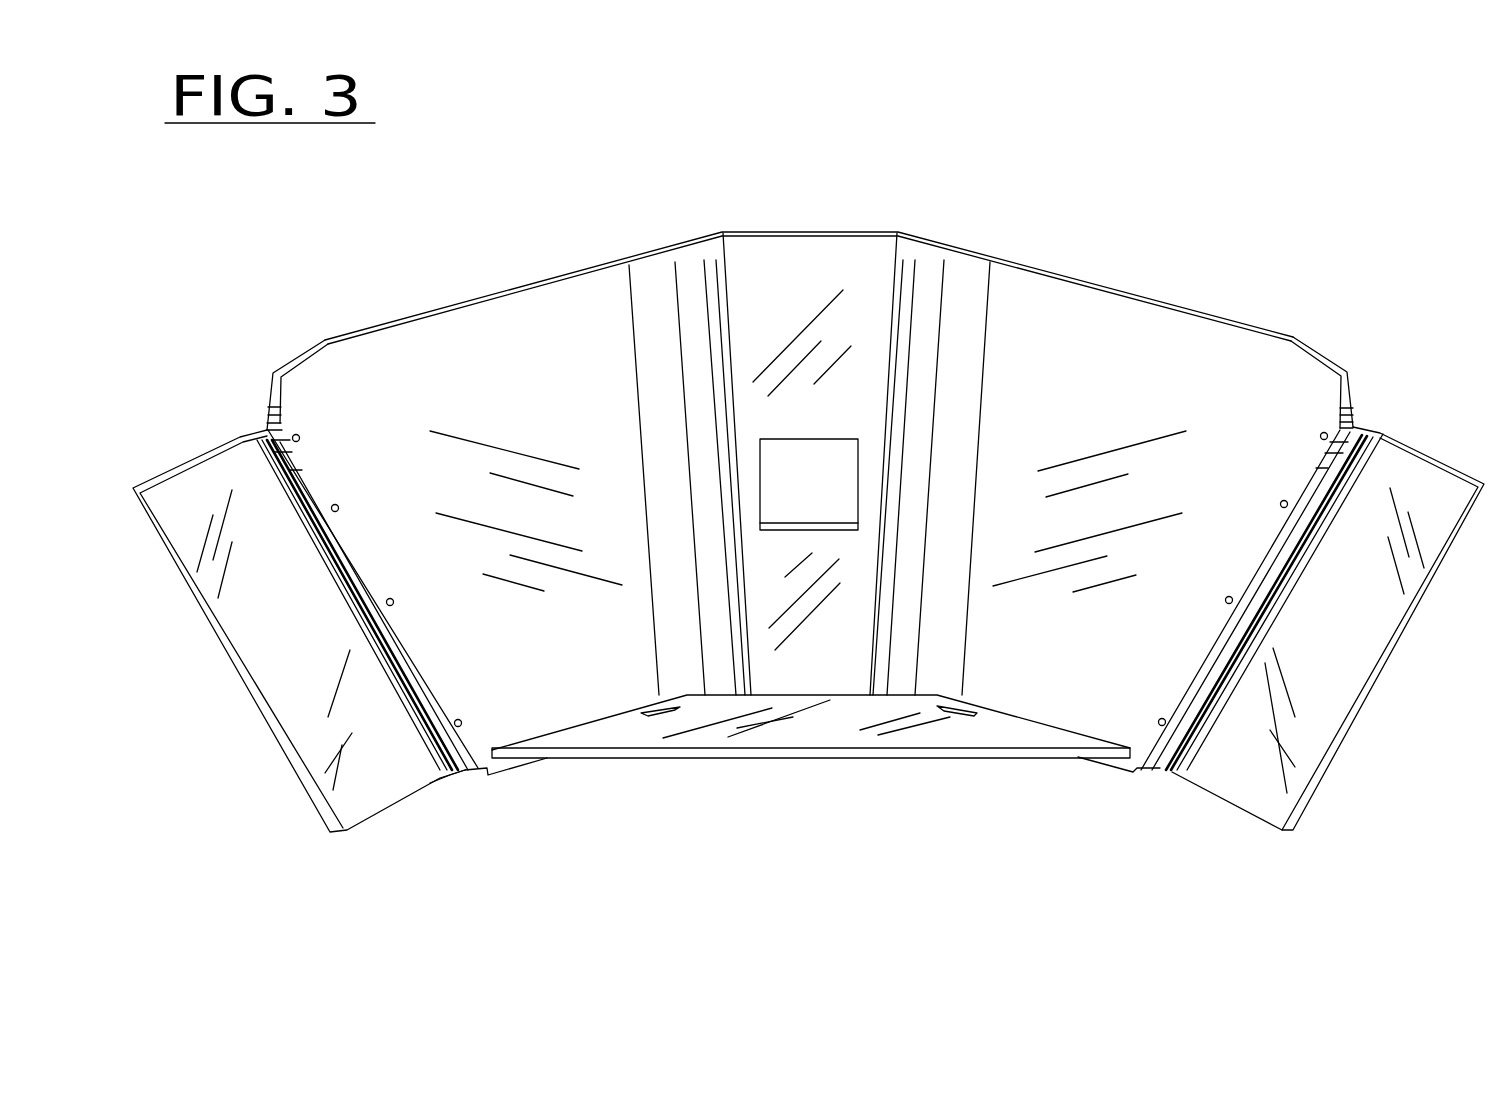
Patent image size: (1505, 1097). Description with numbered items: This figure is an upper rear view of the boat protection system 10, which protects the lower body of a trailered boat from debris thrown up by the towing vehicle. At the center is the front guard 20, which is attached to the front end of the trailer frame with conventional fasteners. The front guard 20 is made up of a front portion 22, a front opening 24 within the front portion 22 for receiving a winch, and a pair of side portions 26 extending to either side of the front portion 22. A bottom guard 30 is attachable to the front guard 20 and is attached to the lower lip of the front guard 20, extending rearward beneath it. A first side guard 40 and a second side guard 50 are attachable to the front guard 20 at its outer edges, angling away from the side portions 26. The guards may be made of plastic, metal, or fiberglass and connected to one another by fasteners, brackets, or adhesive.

The boat protection system 10 is at (1272, 203).
The front guard 20 is at (745, 220).
The front portion 22 is at (840, 257).
The front opening 24 is at (823, 447).
The side portions 26 is at (480, 363).
The bottom guard 30 is at (840, 728).
The first side guard 40 is at (1347, 662).
The second side guard 50 is at (370, 783).